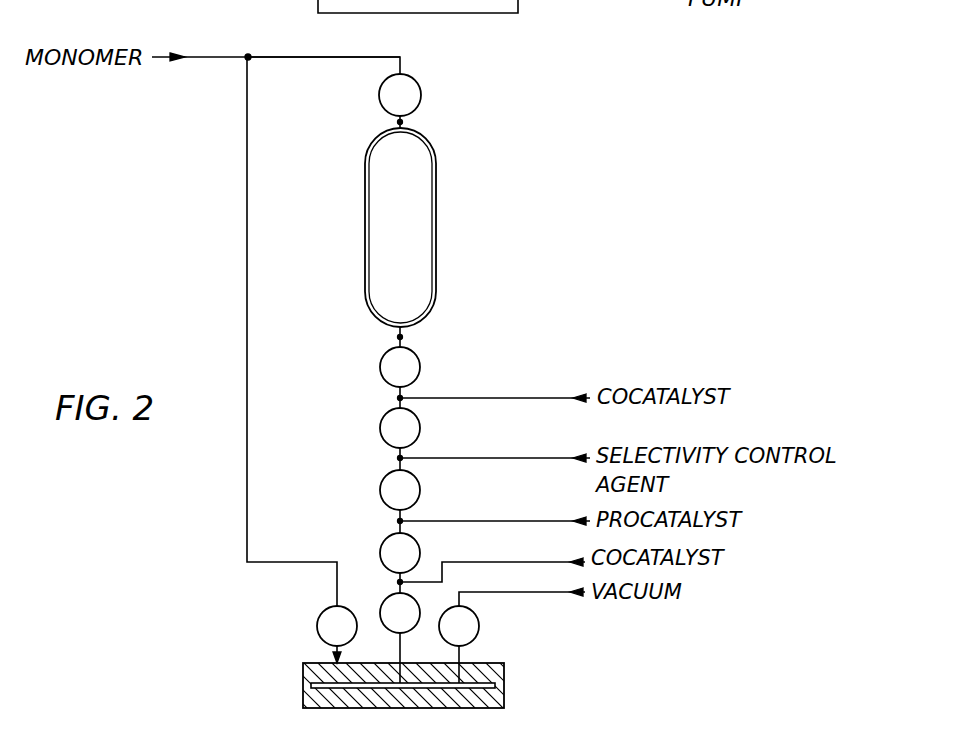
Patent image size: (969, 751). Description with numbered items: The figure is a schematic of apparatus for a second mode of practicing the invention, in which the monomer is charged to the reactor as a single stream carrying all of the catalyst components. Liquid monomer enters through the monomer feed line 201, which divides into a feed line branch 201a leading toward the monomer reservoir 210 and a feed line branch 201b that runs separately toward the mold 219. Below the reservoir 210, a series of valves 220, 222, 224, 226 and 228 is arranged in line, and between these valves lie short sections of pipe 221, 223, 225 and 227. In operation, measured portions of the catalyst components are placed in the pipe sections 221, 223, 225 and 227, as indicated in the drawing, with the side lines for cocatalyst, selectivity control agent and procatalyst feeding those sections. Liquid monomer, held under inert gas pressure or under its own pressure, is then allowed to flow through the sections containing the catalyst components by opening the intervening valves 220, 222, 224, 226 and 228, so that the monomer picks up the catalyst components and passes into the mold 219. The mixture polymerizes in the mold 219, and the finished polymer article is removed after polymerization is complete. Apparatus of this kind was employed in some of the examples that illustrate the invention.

The monomer feed line 201 is at (192, 55).
The monomer feed line branch 201a is at (313, 60).
The monomer feed line branch 201b is at (247, 236).
The monomer reservoir 210 is at (433, 152).
The valve 220 is at (418, 356).
The section of pipe 221 is at (396, 399).
The valve 222 is at (421, 428).
The section of pipe 223 is at (396, 459).
The valve 224 is at (421, 491).
The section of pipe 225 is at (396, 522).
The valve 226 is at (421, 548).
The section of pipe 227 is at (397, 583).
The valve 228 is at (397, 633).
The mold 219 is at (505, 676).